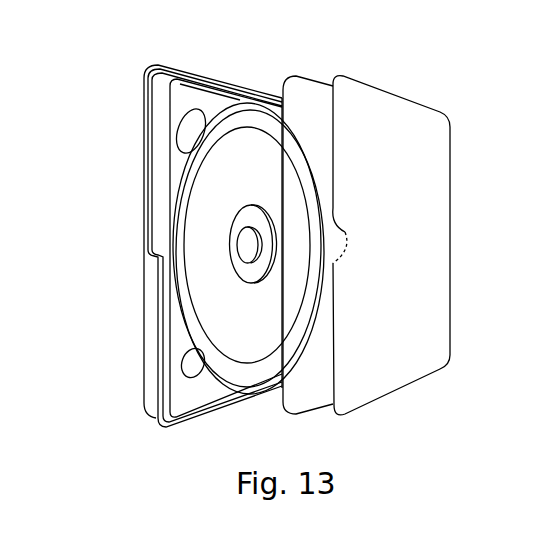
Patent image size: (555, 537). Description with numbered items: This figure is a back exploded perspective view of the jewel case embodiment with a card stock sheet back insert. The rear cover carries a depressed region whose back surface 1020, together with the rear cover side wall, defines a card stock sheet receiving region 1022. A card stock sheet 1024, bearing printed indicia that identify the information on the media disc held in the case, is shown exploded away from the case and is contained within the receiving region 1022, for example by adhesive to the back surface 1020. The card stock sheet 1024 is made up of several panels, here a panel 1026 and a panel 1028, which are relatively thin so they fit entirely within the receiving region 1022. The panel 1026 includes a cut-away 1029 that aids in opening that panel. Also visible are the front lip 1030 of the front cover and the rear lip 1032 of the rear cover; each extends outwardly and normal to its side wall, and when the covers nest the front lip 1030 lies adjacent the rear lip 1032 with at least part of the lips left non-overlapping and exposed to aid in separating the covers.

The back surface 1020 is at (203, 187).
The card stock sheet receiving region 1022 is at (187, 391).
The card stock sheet 1024 is at (414, 224).
The panel 1026 is at (393, 337).
The panel 1028 is at (305, 115).
The cut-away 1029 is at (340, 212).
The front lip 1030 is at (145, 74).
The rear lip 1032 is at (145, 282).